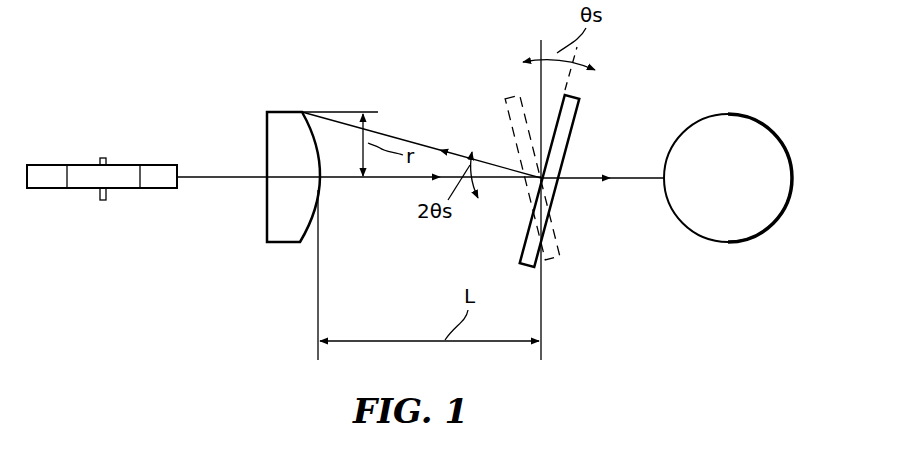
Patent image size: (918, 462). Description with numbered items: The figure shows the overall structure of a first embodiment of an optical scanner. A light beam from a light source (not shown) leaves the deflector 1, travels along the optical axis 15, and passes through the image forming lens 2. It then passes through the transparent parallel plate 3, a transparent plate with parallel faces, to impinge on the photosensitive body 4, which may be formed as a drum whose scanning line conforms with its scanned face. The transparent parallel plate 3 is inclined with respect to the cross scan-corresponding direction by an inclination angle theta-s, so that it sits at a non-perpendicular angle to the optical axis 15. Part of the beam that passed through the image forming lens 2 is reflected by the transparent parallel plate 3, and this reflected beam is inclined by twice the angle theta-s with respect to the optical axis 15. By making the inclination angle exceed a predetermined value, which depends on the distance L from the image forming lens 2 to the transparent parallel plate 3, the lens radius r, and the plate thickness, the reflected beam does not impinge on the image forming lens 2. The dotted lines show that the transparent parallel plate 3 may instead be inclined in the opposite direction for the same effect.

The deflector 1 is at (168, 163).
The optical axis 15 is at (222, 178).
The image forming lens 2 is at (282, 112).
The transparent parallel plate 3 is at (578, 110).
The photosensitive body 4 is at (777, 137).